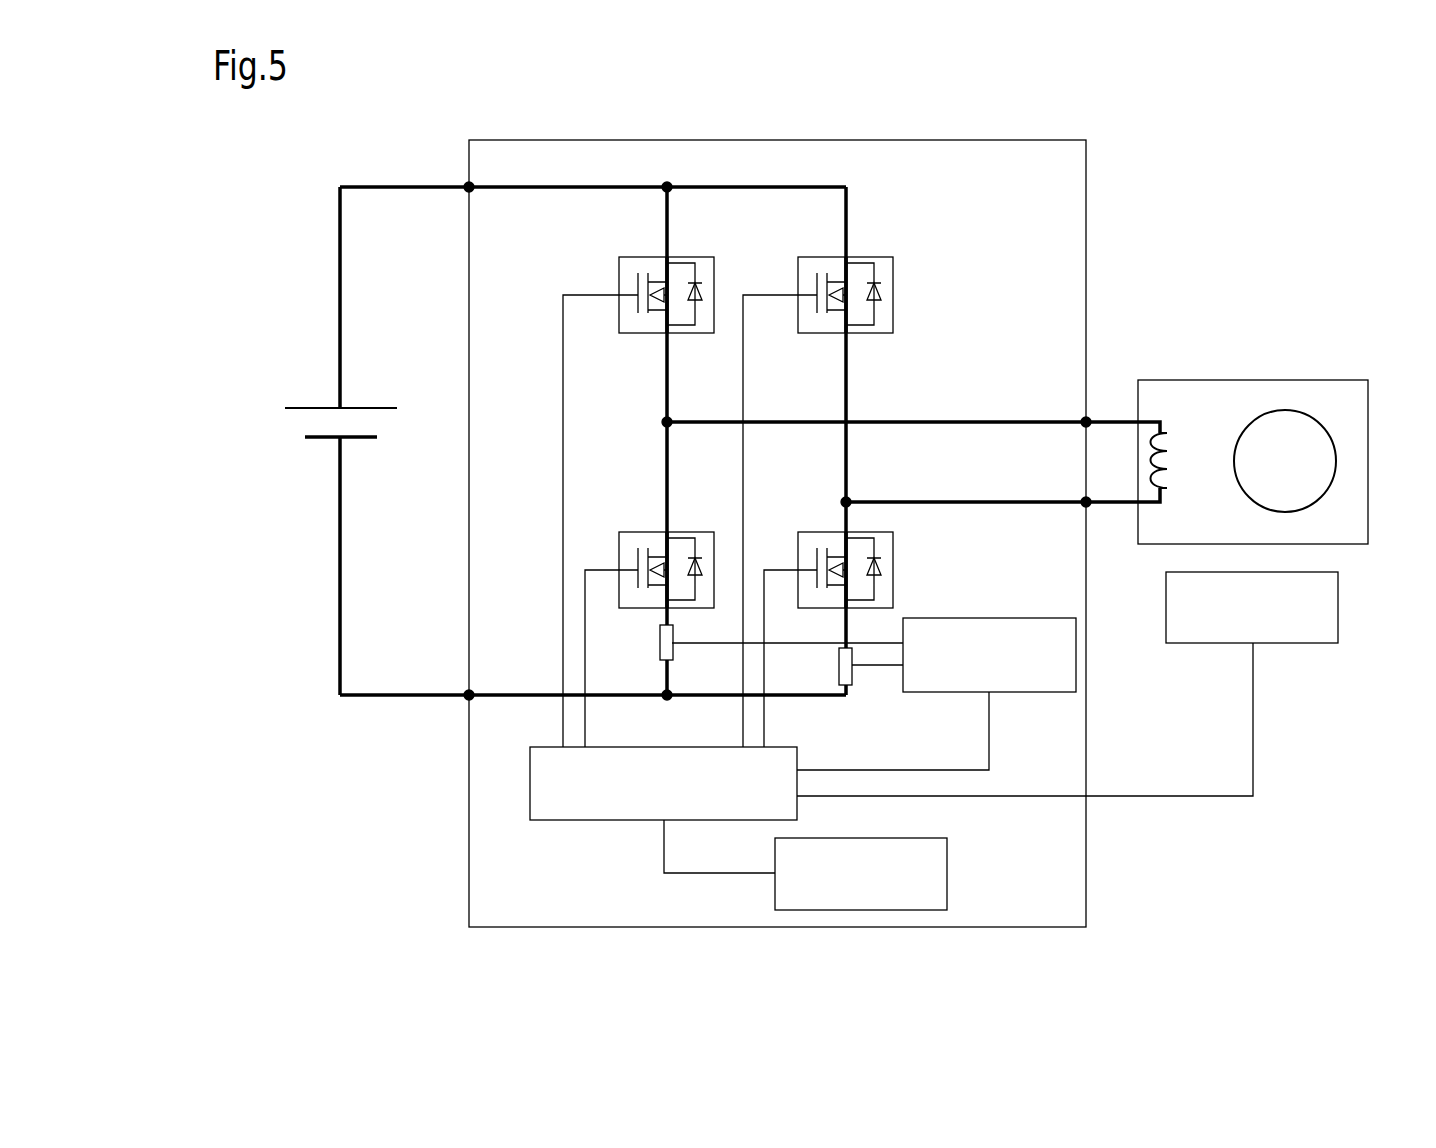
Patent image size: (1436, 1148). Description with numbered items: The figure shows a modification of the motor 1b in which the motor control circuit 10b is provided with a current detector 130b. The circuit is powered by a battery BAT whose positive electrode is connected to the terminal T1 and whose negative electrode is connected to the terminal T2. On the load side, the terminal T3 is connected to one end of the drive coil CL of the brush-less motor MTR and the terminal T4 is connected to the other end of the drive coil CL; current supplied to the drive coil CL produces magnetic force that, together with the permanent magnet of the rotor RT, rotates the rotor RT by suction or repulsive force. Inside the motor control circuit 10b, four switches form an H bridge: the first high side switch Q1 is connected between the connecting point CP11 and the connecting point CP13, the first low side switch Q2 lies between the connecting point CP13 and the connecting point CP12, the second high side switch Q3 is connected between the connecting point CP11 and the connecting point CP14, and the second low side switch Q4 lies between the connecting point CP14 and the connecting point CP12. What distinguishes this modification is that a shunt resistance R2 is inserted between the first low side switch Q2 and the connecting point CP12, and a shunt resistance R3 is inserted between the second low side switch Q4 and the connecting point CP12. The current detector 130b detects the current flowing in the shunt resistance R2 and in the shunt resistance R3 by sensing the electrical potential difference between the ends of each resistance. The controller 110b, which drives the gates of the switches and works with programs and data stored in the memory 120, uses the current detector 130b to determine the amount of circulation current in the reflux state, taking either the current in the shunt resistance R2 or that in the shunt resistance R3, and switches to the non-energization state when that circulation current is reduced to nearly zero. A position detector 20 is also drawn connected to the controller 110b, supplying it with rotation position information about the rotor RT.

The motor 1b is at (1247, 211).
The motor control circuit 10b is at (1066, 140).
The position detector 20 is at (1292, 643).
The controller 110b is at (565, 835).
The memory 120 is at (905, 838).
The current detector 130b is at (1000, 618).
The battery BAT is at (325, 406).
The brush-less motor MTR is at (1302, 380).
The drive coil CL is at (1176, 440).
The rotor RT is at (1308, 418).
The terminal T1 is at (467, 187).
The terminal T2 is at (467, 693).
The terminal T3 is at (1084, 420).
The terminal T4 is at (1085, 505).
The connecting point CP11 is at (665, 186).
The connecting point CP12 is at (665, 697).
The connecting point CP13 is at (665, 421).
The connecting point CP14 is at (849, 500).
The first high side switch Q1 is at (681, 257).
The first low side switch Q2 is at (681, 532).
The second high side switch Q3 is at (861, 257).
The second low side switch Q4 is at (832, 532).
The shunt resistance R2 is at (659, 645).
The shunt resistance R3 is at (853, 684).